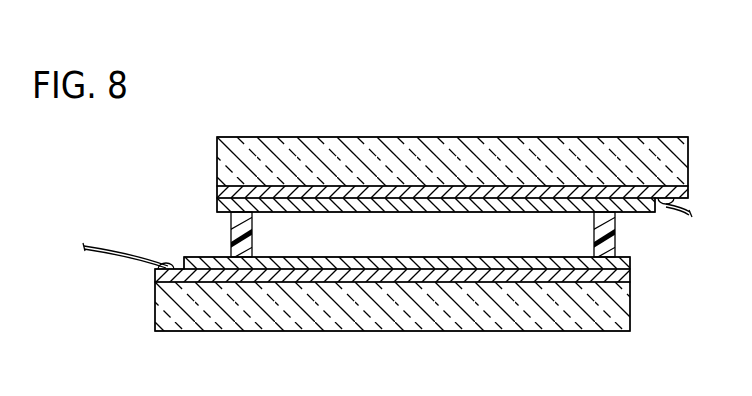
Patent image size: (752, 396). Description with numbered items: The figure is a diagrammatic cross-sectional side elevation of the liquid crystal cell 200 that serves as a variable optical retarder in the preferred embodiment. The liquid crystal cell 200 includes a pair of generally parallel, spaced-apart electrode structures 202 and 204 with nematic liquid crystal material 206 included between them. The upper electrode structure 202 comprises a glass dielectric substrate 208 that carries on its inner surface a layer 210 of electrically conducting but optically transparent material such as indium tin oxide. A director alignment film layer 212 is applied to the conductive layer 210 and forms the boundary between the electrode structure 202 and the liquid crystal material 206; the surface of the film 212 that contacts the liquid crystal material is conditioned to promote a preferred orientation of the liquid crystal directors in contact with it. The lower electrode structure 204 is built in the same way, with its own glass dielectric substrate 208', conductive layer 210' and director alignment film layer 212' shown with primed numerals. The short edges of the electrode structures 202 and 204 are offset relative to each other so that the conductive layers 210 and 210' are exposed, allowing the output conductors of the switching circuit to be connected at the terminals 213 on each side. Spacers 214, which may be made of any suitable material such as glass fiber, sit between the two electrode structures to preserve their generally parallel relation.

The liquid crystal cell 200 is at (144, 334).
The electrode structure 202 is at (216, 163).
The electrode structure 204 is at (339, 332).
The nematic liquid crystal material 206 is at (435, 243).
The glass dielectric substrate 208 is at (452, 135).
The glass dielectric substrate 208' is at (354, 306).
The electrically conducting optically transparent layer 210 is at (415, 181).
The electrically conducting optically transparent layer 210' is at (351, 270).
The director alignment film layer 212 is at (396, 199).
The director alignment film layer 212' is at (386, 241).
The terminals 213 is at (100, 245).
The spacers 214 is at (252, 237).